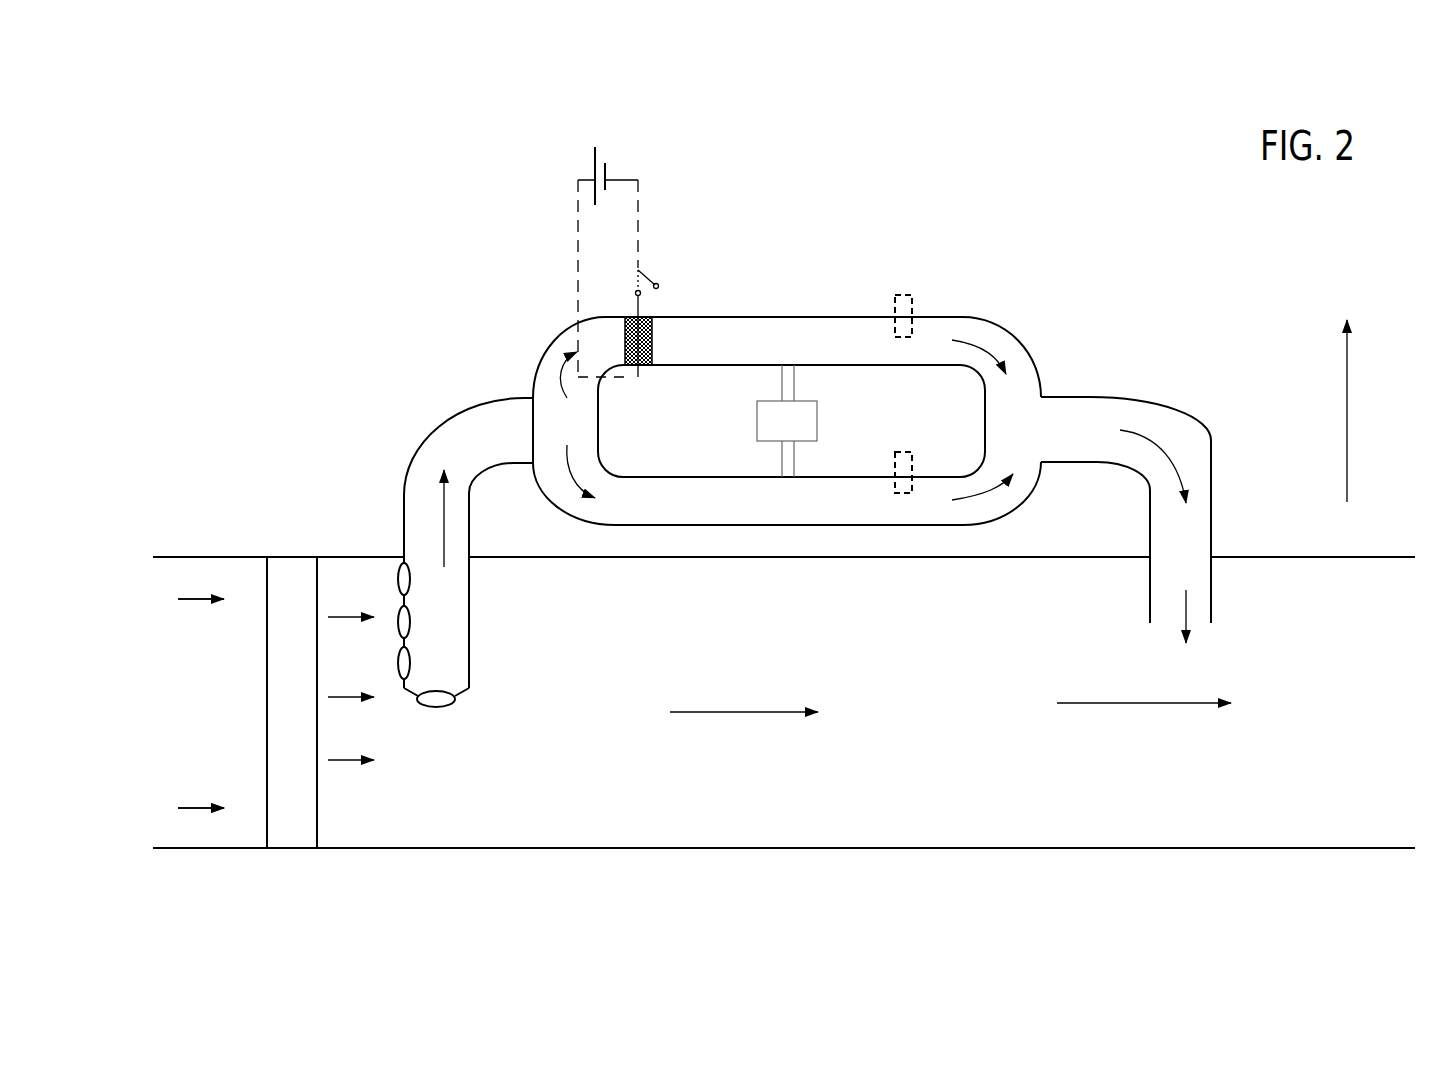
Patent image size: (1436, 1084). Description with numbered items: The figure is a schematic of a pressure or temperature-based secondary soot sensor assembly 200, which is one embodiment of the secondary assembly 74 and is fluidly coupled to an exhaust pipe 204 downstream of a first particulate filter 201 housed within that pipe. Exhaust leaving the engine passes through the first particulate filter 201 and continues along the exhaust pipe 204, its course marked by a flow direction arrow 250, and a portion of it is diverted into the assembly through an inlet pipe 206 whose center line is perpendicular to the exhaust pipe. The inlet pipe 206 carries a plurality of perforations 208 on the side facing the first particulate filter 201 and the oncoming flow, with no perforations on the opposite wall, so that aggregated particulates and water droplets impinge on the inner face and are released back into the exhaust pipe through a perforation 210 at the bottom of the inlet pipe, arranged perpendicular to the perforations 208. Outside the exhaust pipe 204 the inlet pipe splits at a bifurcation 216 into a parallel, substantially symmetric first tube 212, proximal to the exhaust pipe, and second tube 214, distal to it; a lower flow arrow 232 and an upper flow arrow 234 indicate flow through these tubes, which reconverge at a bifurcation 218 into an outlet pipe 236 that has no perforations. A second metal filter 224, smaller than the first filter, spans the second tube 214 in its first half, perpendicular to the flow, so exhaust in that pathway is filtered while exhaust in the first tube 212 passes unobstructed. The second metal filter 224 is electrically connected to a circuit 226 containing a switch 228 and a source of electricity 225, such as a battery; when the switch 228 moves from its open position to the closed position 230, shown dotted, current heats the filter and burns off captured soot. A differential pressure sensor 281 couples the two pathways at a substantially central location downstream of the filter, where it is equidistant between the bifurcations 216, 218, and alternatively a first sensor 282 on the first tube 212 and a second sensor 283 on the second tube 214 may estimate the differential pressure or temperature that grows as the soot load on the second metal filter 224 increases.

The secondary soot sensor assembly 200 is at (1275, 209).
The secondary assembly 74 is at (1281, 273).
The first particulate filter 201 is at (305, 713).
The exhaust pipe 204 is at (782, 635).
The inlet pipe 206 is at (452, 625).
The perforations 208 is at (368, 596).
The perforation 210 is at (438, 707).
The first tube 212 is at (620, 526).
The second tube 214 is at (578, 330).
The bifurcation 216 is at (556, 459).
The bifurcation 218 is at (1043, 429).
The second metal filter 224 is at (653, 348).
The source of electricity 225 is at (594, 178).
The circuit 226 is at (637, 178).
The switch 228 is at (651, 278).
The closed position 230 is at (633, 288).
The lower flow arrow 232 is at (1015, 494).
The upper flow arrow 234 is at (1020, 392).
The outlet pipe 236 is at (1197, 532).
The flow direction arrow 250 is at (1347, 397).
The differential pressure sensor 281 is at (818, 418).
The first sensor 282 is at (903, 452).
The second sensor 283 is at (903, 295).